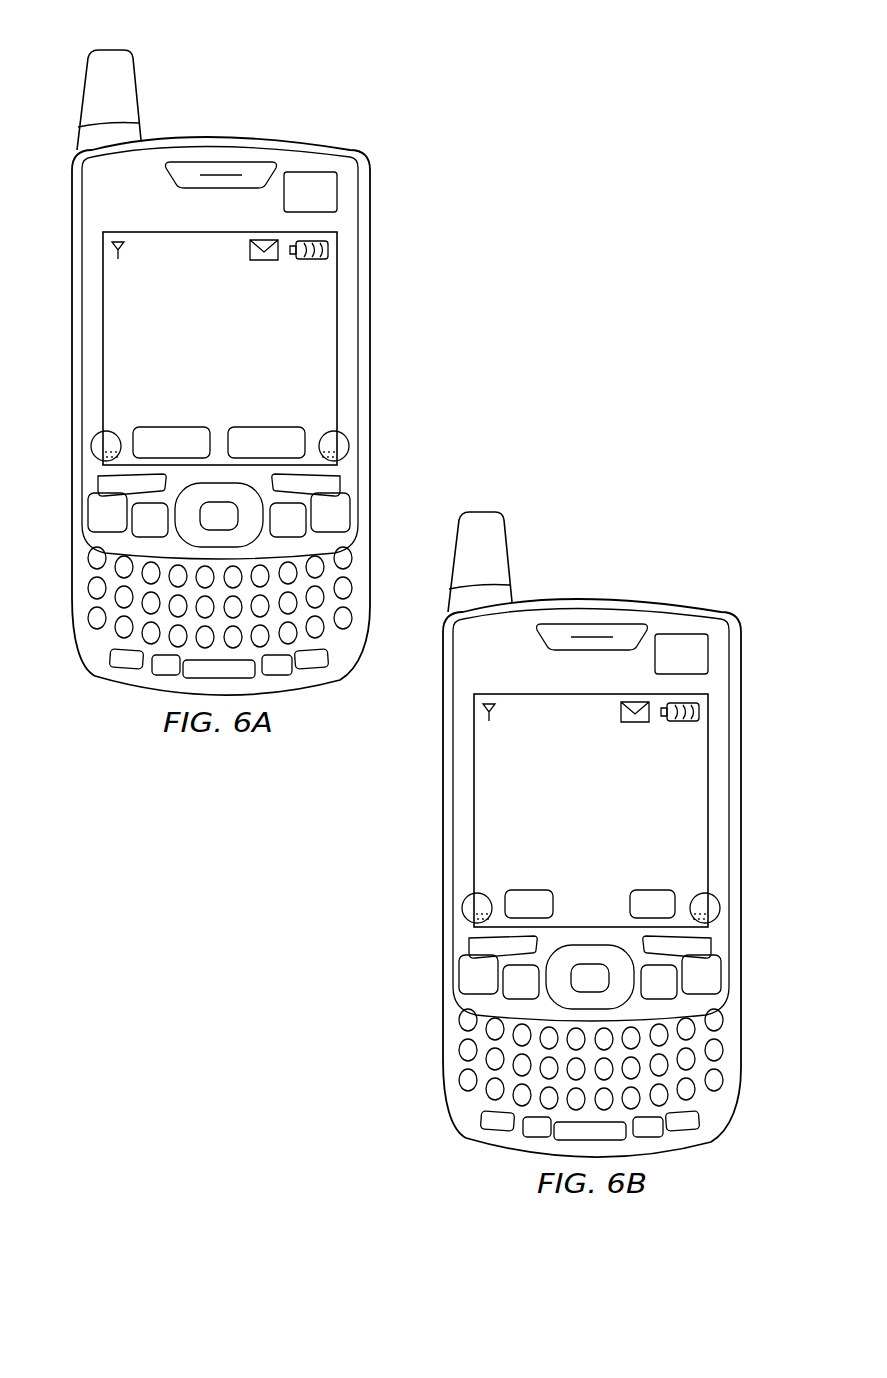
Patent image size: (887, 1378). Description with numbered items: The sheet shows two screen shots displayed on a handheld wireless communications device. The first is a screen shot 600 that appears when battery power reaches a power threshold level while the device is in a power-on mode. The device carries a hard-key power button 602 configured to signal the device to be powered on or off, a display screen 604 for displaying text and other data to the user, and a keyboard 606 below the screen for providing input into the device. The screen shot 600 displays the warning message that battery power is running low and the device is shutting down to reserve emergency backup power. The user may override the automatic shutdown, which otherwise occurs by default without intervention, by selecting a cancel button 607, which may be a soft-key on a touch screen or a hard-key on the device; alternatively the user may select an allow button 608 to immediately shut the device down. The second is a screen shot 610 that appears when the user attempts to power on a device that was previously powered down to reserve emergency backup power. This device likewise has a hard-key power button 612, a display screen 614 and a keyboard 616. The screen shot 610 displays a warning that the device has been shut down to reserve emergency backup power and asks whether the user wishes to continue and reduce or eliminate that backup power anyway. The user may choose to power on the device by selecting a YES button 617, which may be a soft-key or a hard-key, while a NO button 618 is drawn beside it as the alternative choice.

In FIG. 6A, the screen shot 600 is at (200, 64).
In FIG. 6A, the hard-key power button 602 is at (306, 172).
In FIG. 6A, the display screen 604 is at (162, 232).
In FIG. 6A, the keyboard 606 is at (98, 642).
In FIG. 6A, the cancel button 607 is at (93, 438).
In FIG. 6A, the allow button 608 is at (345, 438).
In FIG. 6B, the screen shot 610 is at (589, 814).
In FIG. 6B, the hard-key power button 612 is at (682, 617).
In FIG. 6B, the display screen 614 is at (591, 787).
In FIG. 6B, the keyboard 616 is at (564, 1072).
In FIG. 6B, the YES button 617 is at (473, 905).
In FIG. 6B, the no button 618 is at (707, 905).